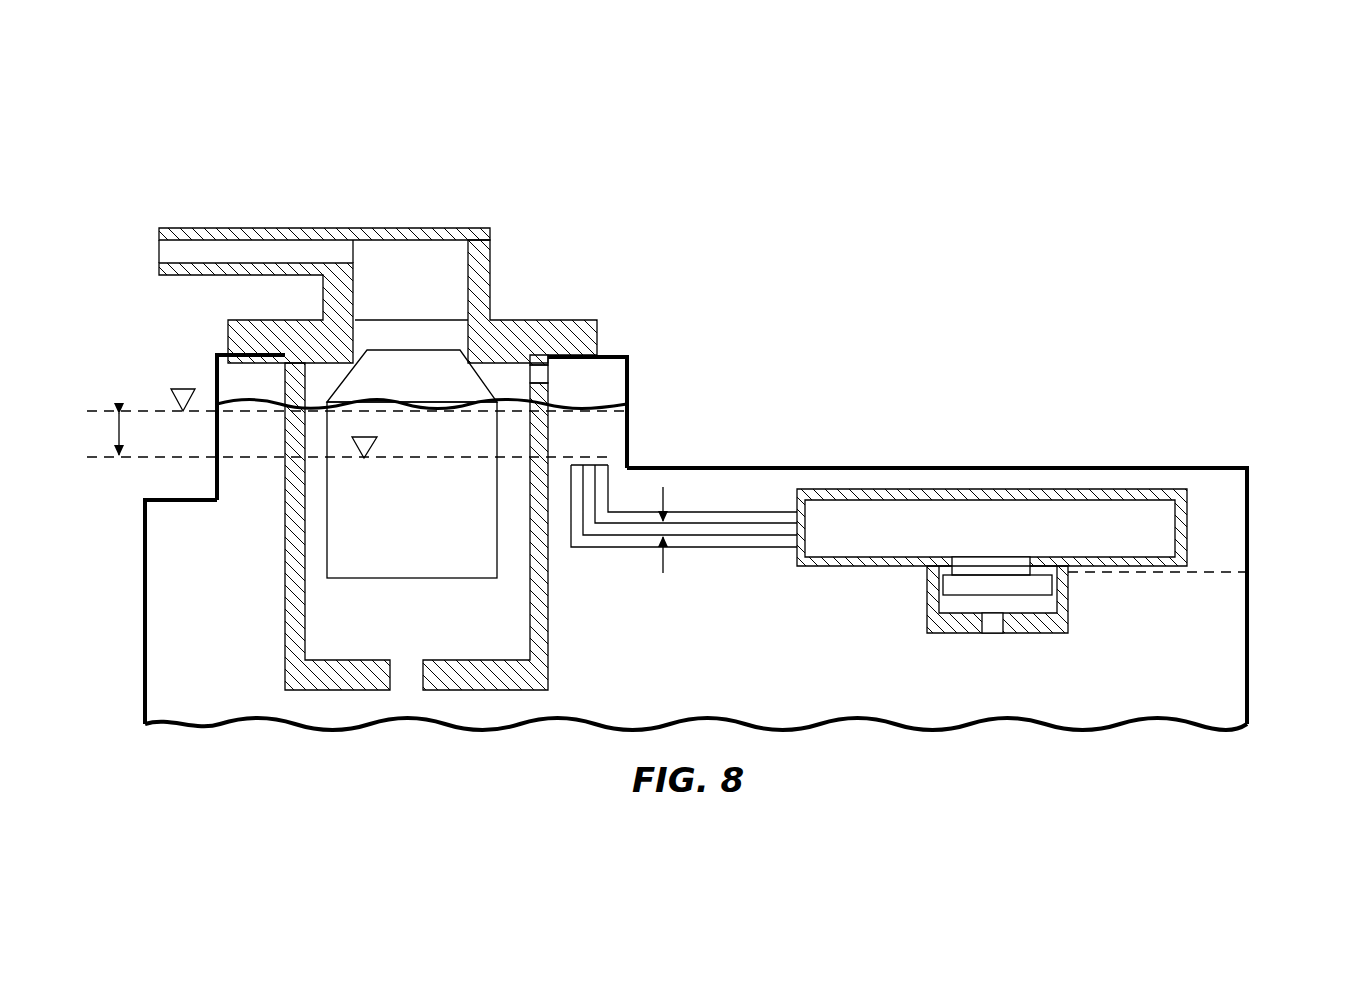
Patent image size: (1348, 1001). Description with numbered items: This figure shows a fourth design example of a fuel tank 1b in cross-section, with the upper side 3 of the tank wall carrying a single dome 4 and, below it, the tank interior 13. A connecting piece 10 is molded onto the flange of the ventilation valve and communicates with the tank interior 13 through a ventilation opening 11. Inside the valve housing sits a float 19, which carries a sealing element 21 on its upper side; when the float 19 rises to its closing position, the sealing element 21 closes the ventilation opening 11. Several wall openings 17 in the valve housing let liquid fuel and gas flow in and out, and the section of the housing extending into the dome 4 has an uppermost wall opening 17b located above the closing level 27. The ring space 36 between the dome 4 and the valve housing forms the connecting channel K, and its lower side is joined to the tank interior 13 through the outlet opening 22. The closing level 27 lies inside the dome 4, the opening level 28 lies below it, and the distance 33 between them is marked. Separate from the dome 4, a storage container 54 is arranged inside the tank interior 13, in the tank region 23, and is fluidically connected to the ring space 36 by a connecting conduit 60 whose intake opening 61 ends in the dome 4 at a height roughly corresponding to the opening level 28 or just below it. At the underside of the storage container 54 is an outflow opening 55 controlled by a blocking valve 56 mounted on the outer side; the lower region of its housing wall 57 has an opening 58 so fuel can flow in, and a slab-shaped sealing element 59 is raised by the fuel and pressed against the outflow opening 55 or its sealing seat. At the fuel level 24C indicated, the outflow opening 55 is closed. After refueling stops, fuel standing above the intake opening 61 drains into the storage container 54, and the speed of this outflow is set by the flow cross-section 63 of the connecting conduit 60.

The fluid dispensing apparatus 1b is at (1255, 338).
The upper side 3 is at (842, 468).
The dome 4 is at (217, 370).
The connecting piece 10 is at (277, 227).
The ventilation opening 11 is at (417, 332).
The tank interior 13 is at (187, 692).
The wall openings 17 is at (407, 678).
The uppermost wall opening 17b is at (537, 373).
The float 19 is at (383, 558).
The sealing element 21 is at (388, 372).
The outlet opening 22 is at (222, 497).
The reservoir 23 is at (1218, 652).
The fuel level 24C is at (1210, 572).
The closing level 27 is at (137, 410).
The opening level 28 is at (107, 460).
The level difference 33 is at (117, 433).
The ring space 36 is at (255, 440).
The storage container 54 is at (1158, 490).
The outflow opening 55 is at (995, 565).
The blocking valve 56 is at (1053, 636).
The housing wall 57 is at (940, 628).
The opening 58 is at (993, 622).
The slab-shaped sealing element 59 is at (1030, 585).
The connecting conduit 60 is at (718, 517).
The intake opening 61 is at (590, 466).
The flow cross-section 63 is at (663, 560).
The connecting channel K is at (598, 380).